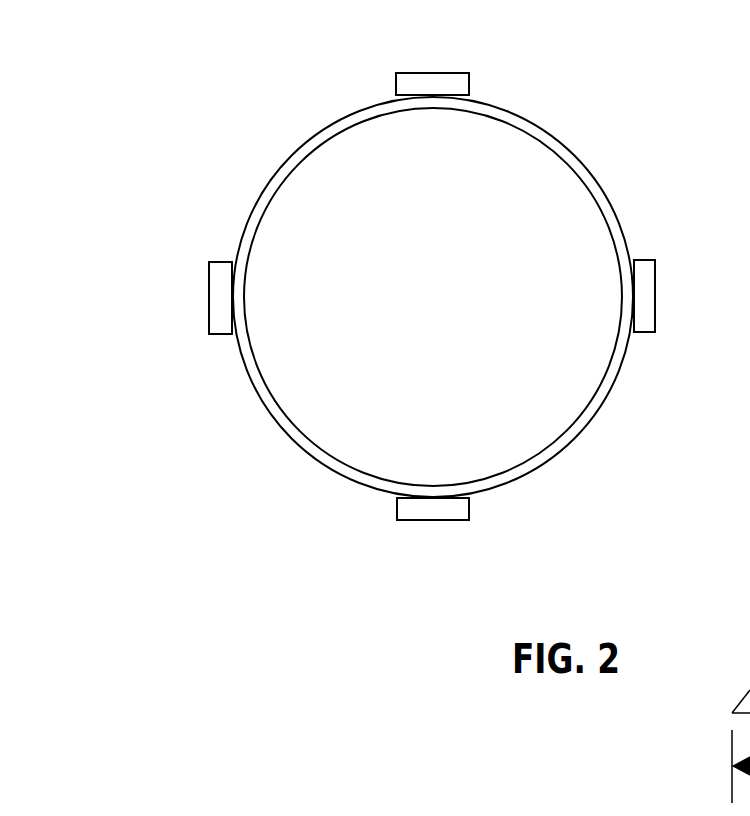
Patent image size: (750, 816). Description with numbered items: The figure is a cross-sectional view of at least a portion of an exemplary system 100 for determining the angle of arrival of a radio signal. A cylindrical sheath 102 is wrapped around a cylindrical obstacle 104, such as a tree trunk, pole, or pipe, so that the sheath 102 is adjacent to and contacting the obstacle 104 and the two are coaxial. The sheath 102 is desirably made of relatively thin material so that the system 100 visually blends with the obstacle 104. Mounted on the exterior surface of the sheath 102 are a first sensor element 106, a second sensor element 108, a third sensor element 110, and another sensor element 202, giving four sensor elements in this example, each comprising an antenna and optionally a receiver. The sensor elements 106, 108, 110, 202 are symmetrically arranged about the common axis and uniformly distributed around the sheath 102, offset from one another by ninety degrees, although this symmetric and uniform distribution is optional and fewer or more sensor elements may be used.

The system 100 is at (607, 152).
The cylindrical sheath 102 is at (533, 470).
The cylindrical obstacle 104 is at (455, 276).
The first sensor element 106 is at (210, 334).
The second sensor element 108 is at (430, 521).
The third sensor element 110 is at (657, 297).
The sensor element 202 is at (425, 72).